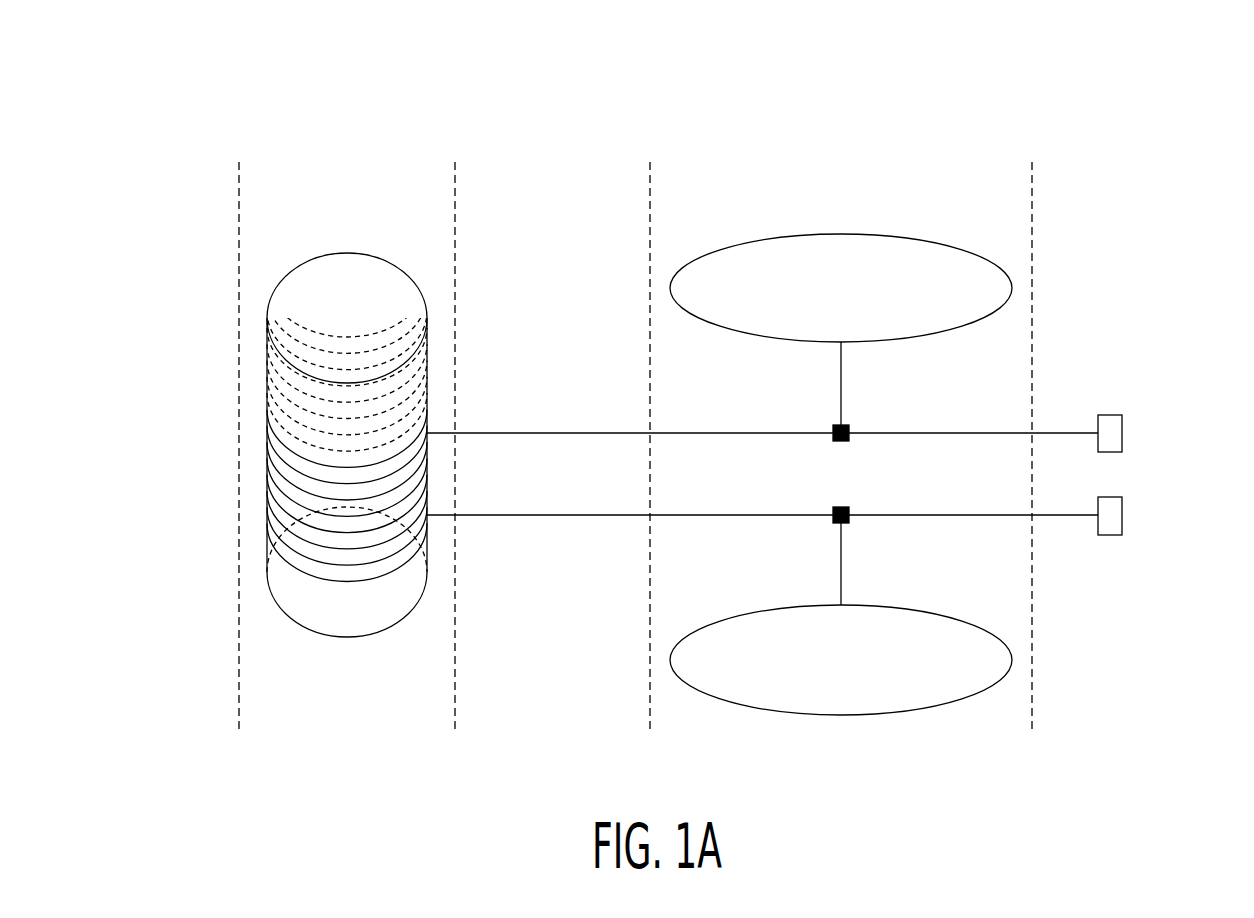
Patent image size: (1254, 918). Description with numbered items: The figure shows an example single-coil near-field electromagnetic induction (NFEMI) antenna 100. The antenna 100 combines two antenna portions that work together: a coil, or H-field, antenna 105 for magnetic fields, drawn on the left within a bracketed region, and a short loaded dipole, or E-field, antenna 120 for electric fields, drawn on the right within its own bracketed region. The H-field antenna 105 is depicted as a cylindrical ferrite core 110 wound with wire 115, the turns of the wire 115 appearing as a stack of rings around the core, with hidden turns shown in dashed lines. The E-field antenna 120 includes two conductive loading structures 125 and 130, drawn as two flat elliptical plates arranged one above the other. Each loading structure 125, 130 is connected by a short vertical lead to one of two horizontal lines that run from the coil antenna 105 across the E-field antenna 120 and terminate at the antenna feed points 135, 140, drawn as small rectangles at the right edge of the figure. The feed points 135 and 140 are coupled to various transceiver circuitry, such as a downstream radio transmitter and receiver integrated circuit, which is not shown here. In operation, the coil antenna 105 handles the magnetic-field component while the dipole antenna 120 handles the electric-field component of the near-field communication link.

The single-coil near-field electromagnetic induction (NFEMI) antenna 100 is at (110, 117).
The coil (H-field) antenna 105 is at (455, 155).
The ferrite core 110 is at (371, 253).
The wire 115 is at (330, 580).
The short loaded dipole (E-field) antenna 120 is at (1032, 155).
The conductive loading structure 125 is at (906, 237).
The conductive loading structure 130 is at (913, 610).
The feed point 135 is at (1122, 428).
The feed point 140 is at (1122, 525).